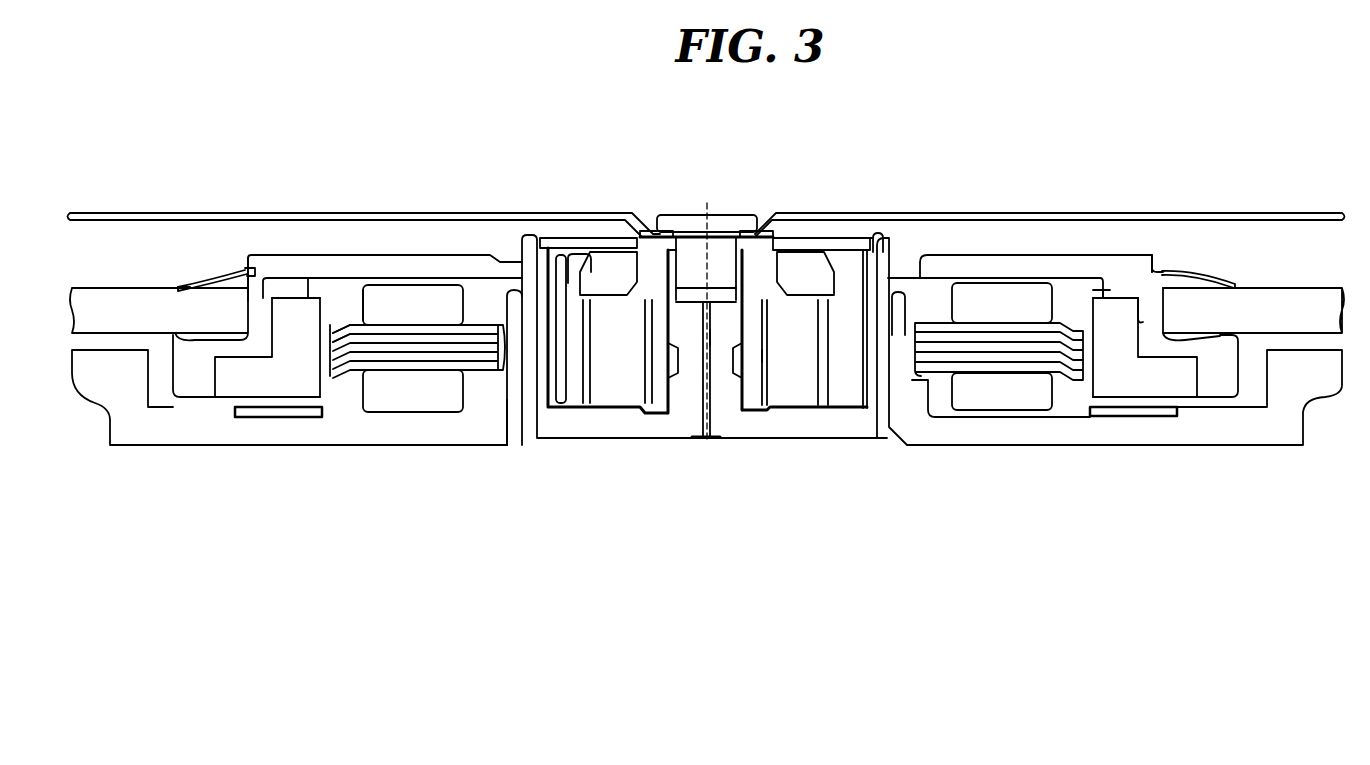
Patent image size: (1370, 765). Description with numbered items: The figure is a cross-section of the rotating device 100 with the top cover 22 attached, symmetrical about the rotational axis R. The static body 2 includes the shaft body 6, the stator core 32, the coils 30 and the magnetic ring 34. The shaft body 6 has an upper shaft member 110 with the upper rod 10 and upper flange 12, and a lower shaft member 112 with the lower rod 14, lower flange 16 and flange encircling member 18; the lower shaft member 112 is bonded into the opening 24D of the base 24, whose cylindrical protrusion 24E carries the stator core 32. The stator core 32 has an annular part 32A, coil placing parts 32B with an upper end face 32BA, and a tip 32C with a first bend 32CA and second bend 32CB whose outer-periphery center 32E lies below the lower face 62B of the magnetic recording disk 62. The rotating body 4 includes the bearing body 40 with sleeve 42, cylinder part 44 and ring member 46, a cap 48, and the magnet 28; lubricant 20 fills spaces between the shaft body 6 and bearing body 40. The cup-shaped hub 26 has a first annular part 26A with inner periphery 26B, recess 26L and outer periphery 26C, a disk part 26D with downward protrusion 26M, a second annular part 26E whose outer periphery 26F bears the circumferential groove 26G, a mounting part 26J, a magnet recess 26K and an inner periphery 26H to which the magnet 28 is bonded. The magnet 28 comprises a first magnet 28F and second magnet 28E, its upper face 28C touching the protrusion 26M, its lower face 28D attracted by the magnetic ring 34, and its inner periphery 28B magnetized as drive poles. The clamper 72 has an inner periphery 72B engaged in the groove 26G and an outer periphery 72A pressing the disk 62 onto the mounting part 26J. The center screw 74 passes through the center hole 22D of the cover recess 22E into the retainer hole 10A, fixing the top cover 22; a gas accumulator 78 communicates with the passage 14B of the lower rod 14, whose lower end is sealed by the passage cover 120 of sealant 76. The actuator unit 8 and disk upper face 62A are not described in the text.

The static body 2 is at (1082, 459).
The rotating body 4 is at (1043, 251).
The shaft body 6 is at (645, 518).
The actuator unit 8 is at (337, 482).
The upper rod 10 is at (660, 384).
The retainer hole 10A is at (655, 237).
The upper flange 12 is at (617, 320).
The lower rod 14 is at (727, 388).
The passage 14B is at (712, 338).
The lower flange 16 is at (793, 424).
The flange encircling member 18 is at (877, 398).
The lubricant 20 is at (767, 352).
The top cover 22 is at (810, 215).
The center hole 22D is at (687, 230).
The cover recess 22E is at (760, 234).
The base 24 is at (1165, 432).
The opening 24D is at (513, 411).
The protrusion 24E is at (512, 296).
The hub 26 is at (953, 262).
The first annular part 26A is at (857, 288).
The inner periphery 26B is at (566, 266).
The outer periphery 26C is at (880, 248).
The disk part 26D is at (1012, 263).
The second annular part 26E is at (1150, 304).
The outer periphery 26F is at (1167, 316).
The circumferential groove 26G is at (257, 263).
The inner periphery 26H is at (1113, 295).
The mounting part 26J is at (189, 383).
The magnet recess 26K is at (228, 374).
The recess 26L is at (886, 236).
The protrusion 26M is at (1110, 290).
The magnet 28 is at (273, 384).
The inner periphery 28B is at (1094, 380).
The upper face 28C is at (1124, 294).
The lower face 28D is at (309, 394).
The second magnet 28E is at (297, 308).
The first magnet 28F is at (257, 384).
The coil 30 is at (448, 400).
The stator core 32 is at (427, 364).
The annular part 32A is at (488, 338).
The coil placing part 32B is at (438, 323).
The upper end face 32BA is at (385, 320).
The tip 32C is at (417, 193).
The first bend 32CA is at (343, 325).
The second bend 32CB is at (337, 328).
The center 32E is at (336, 357).
The magnetic ring 34 is at (247, 417).
The bearing body 40 is at (635, 486).
The sleeve 42 is at (603, 400).
The cylinder part 44 is at (553, 398).
The ring member 46 is at (570, 398).
The cap 48 is at (597, 240).
The magnetic recording disk 62 is at (90, 300).
The holder upper face 62A is at (127, 288).
The lower face 62B is at (192, 333).
The clamper 72 is at (222, 275).
The outer periphery 72A is at (183, 283).
The inner periphery 72B is at (247, 270).
The center screw 74 is at (685, 215).
The sealant 76 is at (673, 370).
The gas accumulator 78 is at (688, 296).
The rotating device 100 is at (950, 463).
The upper shaft member 110 is at (702, 486).
The lower shaft member 112 is at (858, 486).
The passage cover 120 is at (706, 442).
The rotational axis R is at (706, 310).